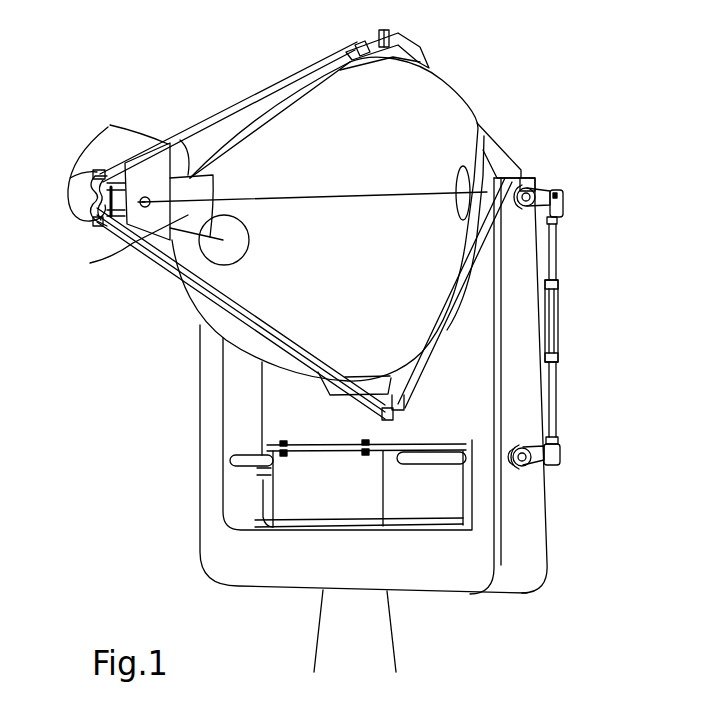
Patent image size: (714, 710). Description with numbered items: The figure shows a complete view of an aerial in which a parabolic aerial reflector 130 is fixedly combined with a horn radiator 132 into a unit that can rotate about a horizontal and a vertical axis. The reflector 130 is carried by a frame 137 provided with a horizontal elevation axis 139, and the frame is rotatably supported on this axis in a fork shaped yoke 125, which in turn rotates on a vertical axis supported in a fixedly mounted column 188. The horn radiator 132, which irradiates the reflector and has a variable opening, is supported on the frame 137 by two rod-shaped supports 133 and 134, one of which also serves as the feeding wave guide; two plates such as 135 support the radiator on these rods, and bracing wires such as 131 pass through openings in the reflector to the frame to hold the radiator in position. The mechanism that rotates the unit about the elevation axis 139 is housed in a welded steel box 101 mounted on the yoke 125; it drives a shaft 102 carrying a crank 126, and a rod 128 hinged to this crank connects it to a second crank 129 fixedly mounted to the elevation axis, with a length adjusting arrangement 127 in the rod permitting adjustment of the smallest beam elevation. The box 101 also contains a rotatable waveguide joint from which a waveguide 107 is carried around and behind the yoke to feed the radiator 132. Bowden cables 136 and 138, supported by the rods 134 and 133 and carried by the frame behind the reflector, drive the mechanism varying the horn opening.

The welded steel box 101 is at (360, 483).
The shaft 102 is at (450, 460).
The waveguide 107 is at (258, 470).
The fork shaped yoke 125 is at (373, 386).
The crank 126 is at (527, 467).
The length adjusting arrangement 127 is at (573, 332).
The rod 128 is at (553, 272).
The second crank 129 is at (538, 188).
The parabolic aerial reflector 130 is at (447, 87).
The wire stay 131 is at (357, 196).
The horn radiator 132 is at (196, 207).
The rod-shaped support 133 is at (273, 337).
The rod-shaped support 134 is at (211, 117).
The plate 135 is at (138, 191).
The Bowden cable 136 is at (78, 219).
The frame 137 is at (440, 338).
The Bowden cable 138 is at (192, 156).
The elevation axis 139 is at (527, 188).
The column 188 is at (355, 631).